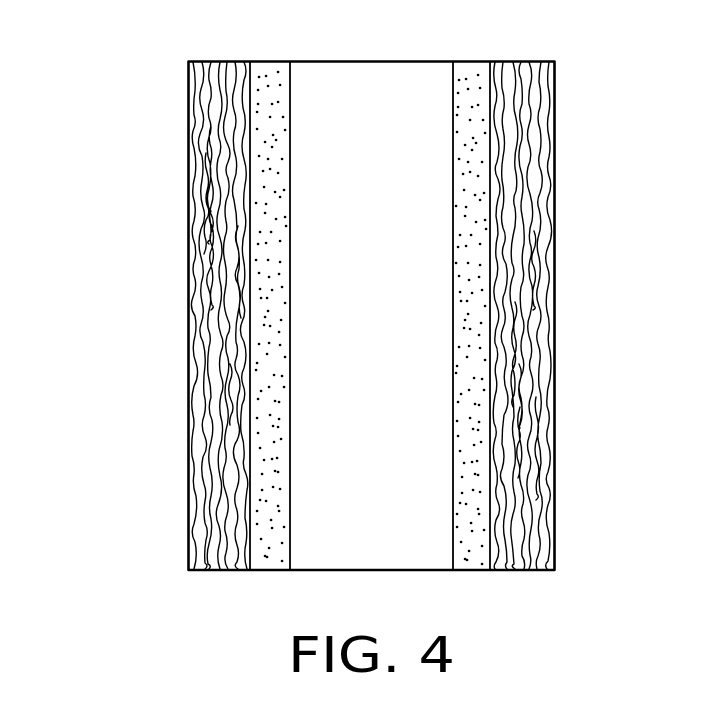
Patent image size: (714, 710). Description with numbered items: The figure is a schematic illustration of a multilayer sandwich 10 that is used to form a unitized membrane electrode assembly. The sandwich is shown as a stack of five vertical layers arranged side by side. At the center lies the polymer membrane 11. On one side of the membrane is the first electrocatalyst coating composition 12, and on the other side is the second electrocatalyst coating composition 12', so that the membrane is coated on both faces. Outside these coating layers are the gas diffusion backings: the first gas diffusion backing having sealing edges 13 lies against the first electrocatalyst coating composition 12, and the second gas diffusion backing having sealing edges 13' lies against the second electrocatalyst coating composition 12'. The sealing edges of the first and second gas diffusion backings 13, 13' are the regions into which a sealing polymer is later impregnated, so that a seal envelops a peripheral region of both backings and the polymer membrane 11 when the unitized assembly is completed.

The multilayer sandwich 10 is at (136, 297).
The polymer membrane 11 is at (373, 61).
The first electrocatalyst coating composition 12 is at (257, 289).
The second electrocatalyst coating composition 12' is at (496, 289).
The first gas diffusion backing having sealing edges 13 is at (194, 290).
The second gas diffusion backing having sealing edges 13' is at (550, 290).